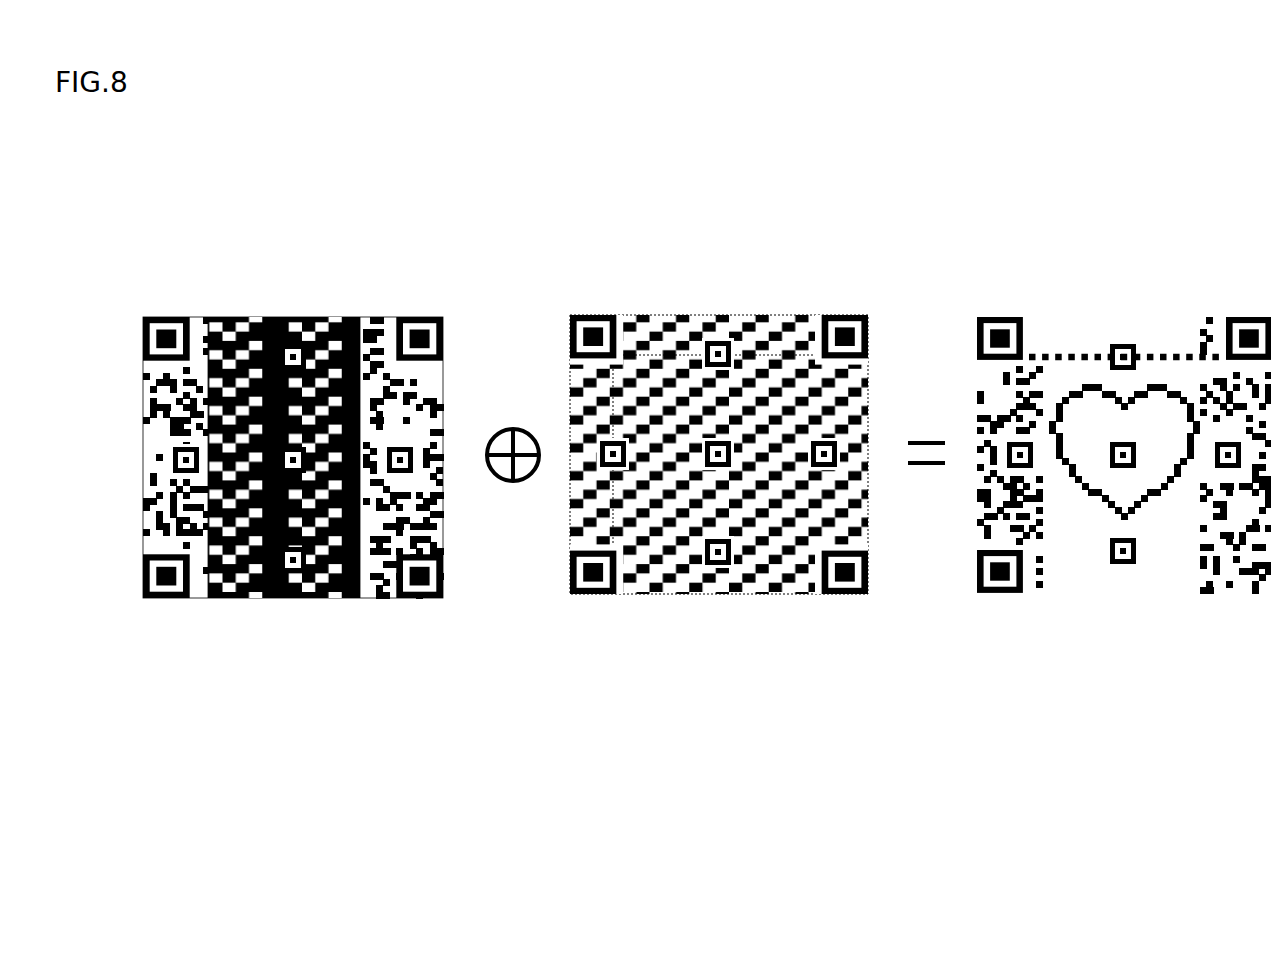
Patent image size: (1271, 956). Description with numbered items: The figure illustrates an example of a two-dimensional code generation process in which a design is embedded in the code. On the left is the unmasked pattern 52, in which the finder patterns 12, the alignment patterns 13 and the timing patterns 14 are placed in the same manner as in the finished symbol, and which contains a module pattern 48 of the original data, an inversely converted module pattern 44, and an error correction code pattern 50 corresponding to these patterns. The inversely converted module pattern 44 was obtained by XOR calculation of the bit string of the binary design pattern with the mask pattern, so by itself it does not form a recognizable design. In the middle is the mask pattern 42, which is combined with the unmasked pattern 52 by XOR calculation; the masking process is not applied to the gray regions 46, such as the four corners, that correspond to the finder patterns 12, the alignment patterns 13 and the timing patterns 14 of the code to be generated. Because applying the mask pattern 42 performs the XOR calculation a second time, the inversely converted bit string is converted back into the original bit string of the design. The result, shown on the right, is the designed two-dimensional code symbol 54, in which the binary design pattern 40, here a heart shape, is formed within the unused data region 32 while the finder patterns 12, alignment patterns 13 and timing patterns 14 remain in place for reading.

The finder pattern 12 is at (143, 337).
The alignment pattern 13 is at (178, 464).
The timing pattern 14 is at (180, 524).
The error correction code pattern 50 is at (152, 428).
The inversely converted module pattern 44 is at (358, 313).
The module pattern of the original data 48 is at (362, 313).
The unmasked pattern 52 is at (269, 400).
The mask pattern 42 is at (719, 431).
The regions corresponding to the finder, alignment and timing patterns 46 is at (716, 582).
The designed two-dimensional code symbol 54 is at (1124, 398).
The binary design pattern 40 is at (1121, 392).
The unused data region 32 is at (1124, 452).